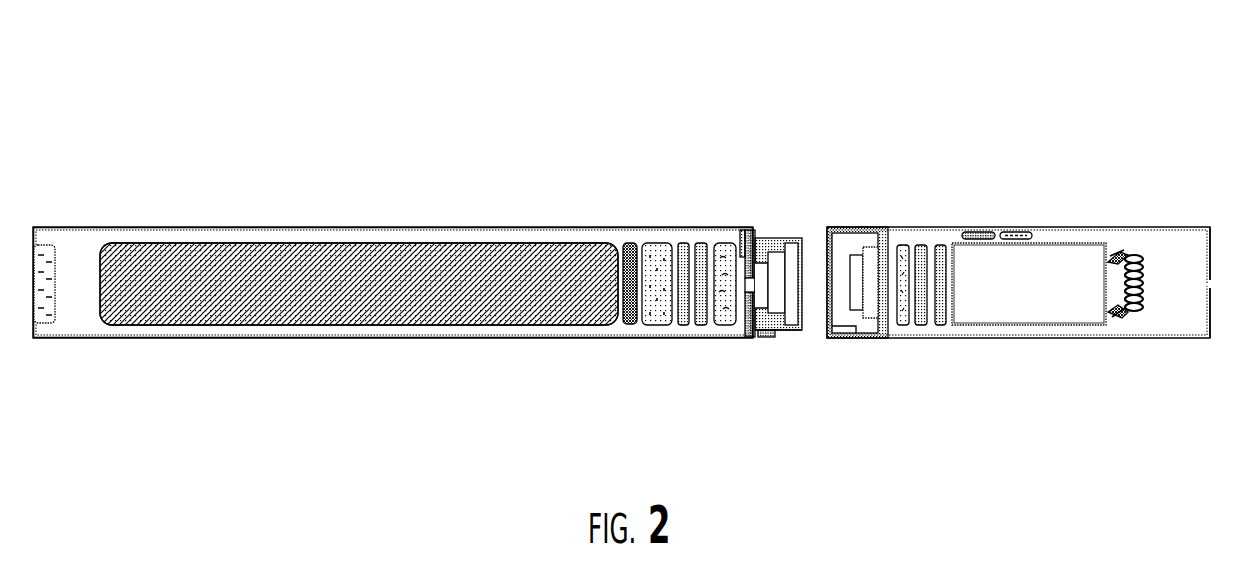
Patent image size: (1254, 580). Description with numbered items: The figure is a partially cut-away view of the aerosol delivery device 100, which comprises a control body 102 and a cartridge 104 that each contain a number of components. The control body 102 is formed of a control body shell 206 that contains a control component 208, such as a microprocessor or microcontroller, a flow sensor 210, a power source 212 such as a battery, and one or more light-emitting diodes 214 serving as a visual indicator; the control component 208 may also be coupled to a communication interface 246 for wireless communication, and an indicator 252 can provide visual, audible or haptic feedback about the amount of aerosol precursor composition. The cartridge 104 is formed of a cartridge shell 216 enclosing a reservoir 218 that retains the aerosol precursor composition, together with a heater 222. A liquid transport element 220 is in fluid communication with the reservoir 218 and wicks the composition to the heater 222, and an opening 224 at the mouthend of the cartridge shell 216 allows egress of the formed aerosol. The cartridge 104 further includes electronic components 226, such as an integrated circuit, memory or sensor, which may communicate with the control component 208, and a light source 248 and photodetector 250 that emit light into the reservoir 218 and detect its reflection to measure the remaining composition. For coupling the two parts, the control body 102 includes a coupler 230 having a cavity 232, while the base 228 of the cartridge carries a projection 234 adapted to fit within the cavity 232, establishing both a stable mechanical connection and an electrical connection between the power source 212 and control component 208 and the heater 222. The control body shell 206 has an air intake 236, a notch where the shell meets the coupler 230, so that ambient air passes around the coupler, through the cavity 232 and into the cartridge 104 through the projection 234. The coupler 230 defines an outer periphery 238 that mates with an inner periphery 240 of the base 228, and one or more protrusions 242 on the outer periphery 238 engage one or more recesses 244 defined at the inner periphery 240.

The aerosol delivery device 100 is at (518, 72).
The control body 102 is at (302, 174).
The cartridge 104 is at (1023, 155).
The control body shell 206 is at (170, 338).
The control component 208 is at (657, 325).
The flow sensor 210 is at (722, 326).
The power source 212 is at (313, 323).
The light-emitting diode 214 is at (42, 323).
The cartridge shell 216 is at (985, 338).
The reservoir 218 is at (1055, 323).
The liquid transport element 220 is at (1143, 307).
The heater 222 is at (1122, 314).
The opening 224 is at (1208, 279).
The electronic components 226 is at (902, 246).
The base 228 is at (880, 338).
The coupler 230 is at (783, 331).
The cavity 232 is at (778, 240).
The projection 234 is at (856, 255).
The air intake 236 is at (743, 229).
The outer periphery 238 is at (785, 243).
The inner periphery 240 is at (848, 262).
The protrusion 242 is at (763, 337).
The recess 244 is at (847, 338).
The communication interface 246 is at (630, 247).
The light source 248 is at (980, 233).
The photodetector 250 is at (1015, 233).
The indicator 252 is at (684, 245).